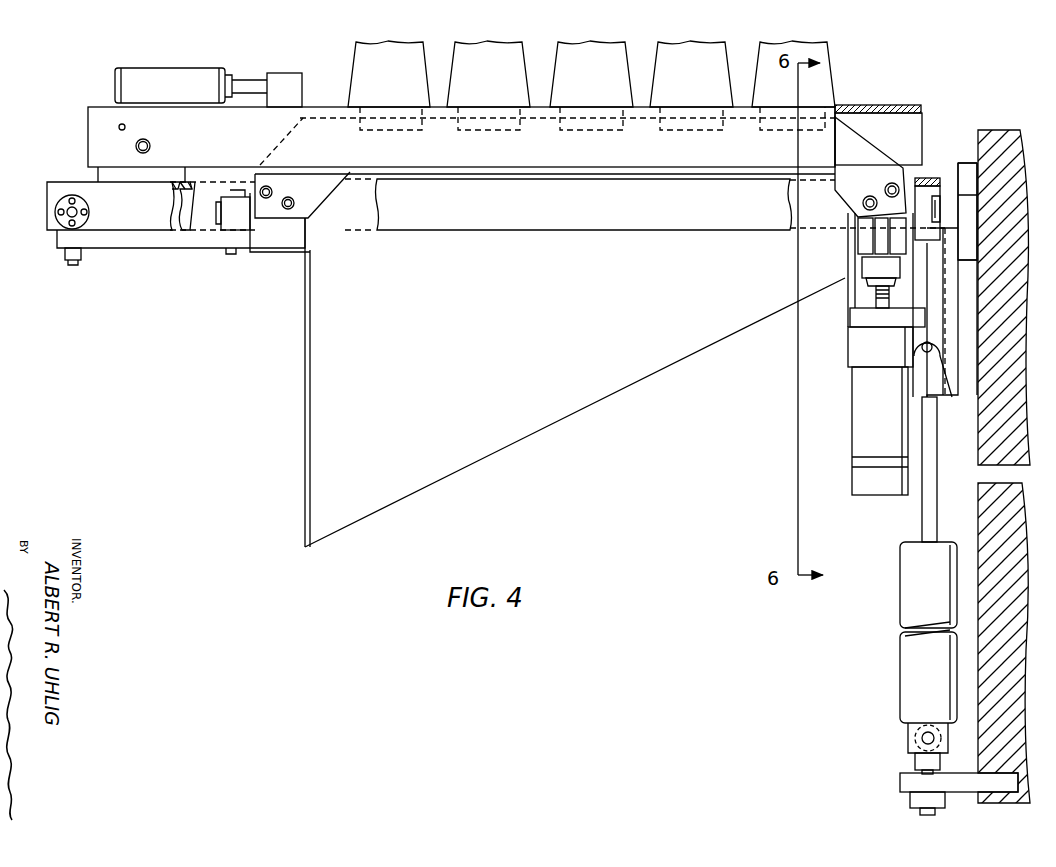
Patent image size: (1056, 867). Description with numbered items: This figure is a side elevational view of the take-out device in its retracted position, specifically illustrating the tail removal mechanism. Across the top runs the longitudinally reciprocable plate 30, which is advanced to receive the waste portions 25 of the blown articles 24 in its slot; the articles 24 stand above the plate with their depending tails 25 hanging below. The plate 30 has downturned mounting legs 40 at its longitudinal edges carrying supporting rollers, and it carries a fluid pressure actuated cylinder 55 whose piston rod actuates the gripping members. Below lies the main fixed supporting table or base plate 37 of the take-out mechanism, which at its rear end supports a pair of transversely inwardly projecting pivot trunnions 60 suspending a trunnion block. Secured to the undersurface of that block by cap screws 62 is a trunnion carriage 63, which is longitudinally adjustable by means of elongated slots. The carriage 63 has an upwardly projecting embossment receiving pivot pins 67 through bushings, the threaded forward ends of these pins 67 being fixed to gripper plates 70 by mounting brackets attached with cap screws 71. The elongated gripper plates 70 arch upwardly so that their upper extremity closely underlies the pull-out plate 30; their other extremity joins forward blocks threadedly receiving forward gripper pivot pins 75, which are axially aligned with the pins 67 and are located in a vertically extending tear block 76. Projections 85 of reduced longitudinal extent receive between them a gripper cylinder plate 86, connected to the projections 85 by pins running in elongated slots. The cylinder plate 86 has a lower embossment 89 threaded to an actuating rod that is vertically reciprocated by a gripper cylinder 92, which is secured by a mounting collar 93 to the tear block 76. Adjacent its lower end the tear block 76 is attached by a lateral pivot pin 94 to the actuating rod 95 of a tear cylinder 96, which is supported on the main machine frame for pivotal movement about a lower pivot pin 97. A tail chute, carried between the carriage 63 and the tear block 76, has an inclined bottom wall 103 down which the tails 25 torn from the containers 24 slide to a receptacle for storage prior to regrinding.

The article 24 is at (374, 79).
The waste portion 25 is at (470, 130).
The longitudinally reciprocable plate 30 is at (879, 102).
The supporting base plate 37 is at (50, 196).
The downturned mounting legs 40 is at (95, 138).
The fluid pressure actuated cylinder 55 is at (160, 77).
The pivot trunnions 60 is at (60, 218).
The cap screws 62 is at (76, 258).
The trunnion carriage 63 is at (116, 248).
The pivot pins 67 is at (215, 216).
The gripper plates 70 is at (314, 207).
The cap screws 71 is at (294, 203).
The forward gripper pivot pins 75 is at (938, 213).
The tear block 76 is at (945, 212).
The projections 85 is at (858, 246).
The gripper cylinder plate 86 is at (880, 221).
The lower embossment 89 is at (875, 268).
The gripper cylinder 92 is at (865, 401).
The mounting collar 93 is at (865, 318).
The lateral pivot pin 94 is at (946, 397).
The actuating rod 95 is at (922, 518).
The tear cylinder 96 is at (912, 595).
The lower pivot pin 97 is at (920, 739).
The inclined bottom wall 103 is at (422, 358).